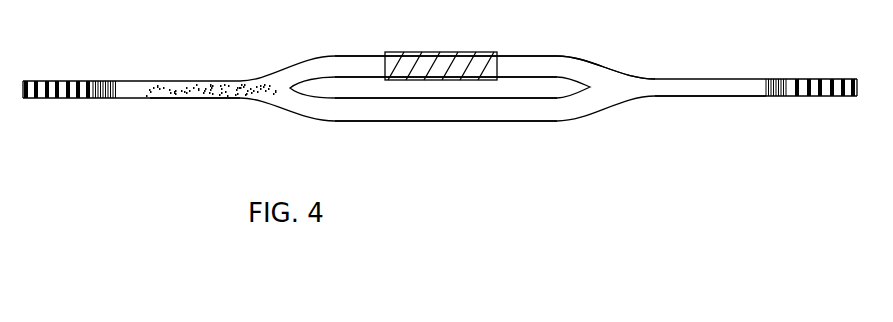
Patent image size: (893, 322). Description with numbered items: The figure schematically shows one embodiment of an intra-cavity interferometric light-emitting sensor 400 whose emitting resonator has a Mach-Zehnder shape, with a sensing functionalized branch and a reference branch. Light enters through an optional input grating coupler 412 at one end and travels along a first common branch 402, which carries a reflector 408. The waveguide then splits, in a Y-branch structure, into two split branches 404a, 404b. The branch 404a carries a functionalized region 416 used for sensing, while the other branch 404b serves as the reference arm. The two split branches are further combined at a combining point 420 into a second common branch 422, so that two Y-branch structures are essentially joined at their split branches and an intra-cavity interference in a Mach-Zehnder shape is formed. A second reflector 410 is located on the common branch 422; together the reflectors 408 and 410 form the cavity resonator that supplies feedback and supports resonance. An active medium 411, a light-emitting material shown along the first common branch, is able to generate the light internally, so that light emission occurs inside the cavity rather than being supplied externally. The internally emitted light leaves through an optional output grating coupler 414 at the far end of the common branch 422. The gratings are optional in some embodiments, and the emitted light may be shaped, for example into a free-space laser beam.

The light-emitting sensor 400 is at (630, 275).
The first common branch 402 is at (174, 84).
The split branch 404a is at (535, 62).
The split branch 404b is at (514, 121).
The reflector 408 is at (104, 99).
The reflector 410 is at (780, 78).
The active medium 411 is at (222, 100).
The input grating coupler 412 is at (44, 81).
The output grating coupler 414 is at (846, 97).
The functionalized region 416 is at (443, 54).
The combining point 420 is at (618, 78).
The second common branch 422 is at (720, 88).